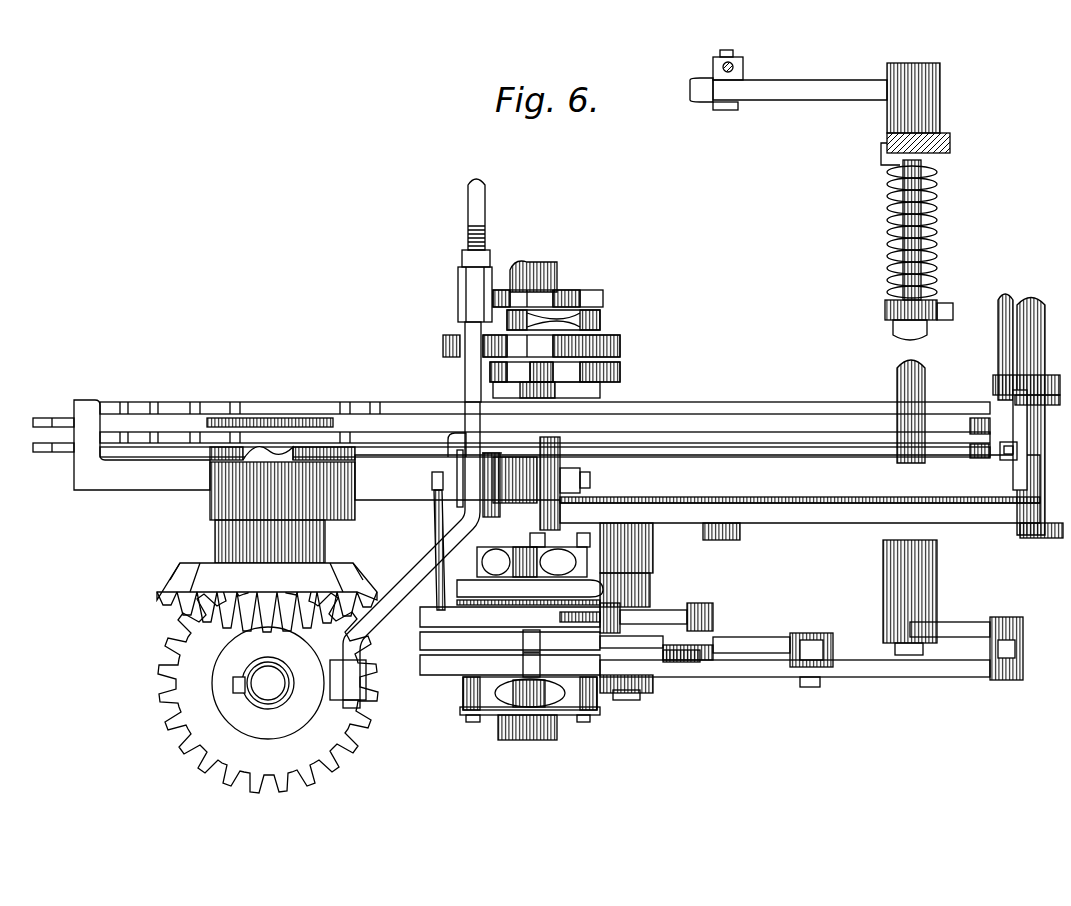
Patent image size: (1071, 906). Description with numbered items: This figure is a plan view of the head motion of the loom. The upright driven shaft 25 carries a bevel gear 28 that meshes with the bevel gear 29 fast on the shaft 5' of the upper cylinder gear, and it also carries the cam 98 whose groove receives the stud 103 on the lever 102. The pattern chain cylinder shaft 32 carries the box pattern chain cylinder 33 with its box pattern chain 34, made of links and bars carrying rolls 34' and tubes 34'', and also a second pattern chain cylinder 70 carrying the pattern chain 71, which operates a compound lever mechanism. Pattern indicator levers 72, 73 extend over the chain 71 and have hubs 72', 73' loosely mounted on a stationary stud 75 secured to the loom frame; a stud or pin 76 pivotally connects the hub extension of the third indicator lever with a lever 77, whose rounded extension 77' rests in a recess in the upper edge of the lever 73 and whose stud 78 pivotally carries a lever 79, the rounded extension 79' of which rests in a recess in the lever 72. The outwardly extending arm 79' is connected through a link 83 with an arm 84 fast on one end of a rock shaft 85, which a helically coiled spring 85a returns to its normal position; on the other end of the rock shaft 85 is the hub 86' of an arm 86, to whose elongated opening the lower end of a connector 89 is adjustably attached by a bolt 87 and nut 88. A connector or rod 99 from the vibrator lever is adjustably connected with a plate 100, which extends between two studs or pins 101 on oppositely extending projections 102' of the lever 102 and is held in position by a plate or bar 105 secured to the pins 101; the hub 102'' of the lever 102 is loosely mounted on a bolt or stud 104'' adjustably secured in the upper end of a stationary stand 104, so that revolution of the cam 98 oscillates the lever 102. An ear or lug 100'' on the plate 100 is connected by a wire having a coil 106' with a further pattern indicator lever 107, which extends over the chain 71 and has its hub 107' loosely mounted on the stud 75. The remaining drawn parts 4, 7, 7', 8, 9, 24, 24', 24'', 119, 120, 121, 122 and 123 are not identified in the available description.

The frame beam 4 is at (135, 482).
The shaft of the upper cylinder gear 5' is at (252, 505).
The rod 7 is at (545, 409).
The rod 7' is at (545, 397).
The rod end 8 is at (36, 421).
The post 9 is at (1002, 298).
The rod 24 is at (493, 625).
The rod block 24' is at (643, 605).
The rod gear 24'' is at (720, 613).
The upright driven shaft 25 is at (258, 678).
The bevel gear 28 is at (215, 770).
The bevel gear 29 is at (190, 590).
The pattern chain cylinder shaft 32 is at (545, 275).
The box pattern chain cylinder 33 is at (585, 318).
The box pattern chain 34 is at (556, 280).
The rolls 34' is at (571, 336).
The tubes 34'' is at (577, 375).
The second pattern chain cylinder 70 is at (530, 700).
The pattern chain 71 is at (580, 722).
The pattern indicator lever 72 is at (493, 675).
The hub 72' is at (646, 708).
The pattern indicator lever 73 is at (524, 650).
The hub 73' is at (688, 624).
The stationary stud 75 is at (625, 695).
The stud or pin 76 is at (690, 665).
The lever 77 is at (773, 638).
The rounded extension 77' is at (479, 670).
The stud 78 is at (808, 690).
The lever 79 is at (795, 687).
The rounded extension 79' is at (674, 697).
The link 83 is at (1015, 640).
The arm 84 is at (950, 628).
The rock shaft 85 is at (900, 336).
The helically coiled spring 85a is at (895, 240).
The arm 86 is at (788, 102).
The hub 86' is at (894, 114).
The bolt 87 is at (730, 52).
The nut 88 is at (722, 108).
The connector 89 is at (740, 63).
The cam 98 is at (240, 715).
The connector or rod 99 is at (475, 202).
The plate 100 is at (450, 326).
The ear or lug 100'' is at (425, 462).
The studs or pins 101 is at (458, 492).
The lever 102 is at (411, 551).
The projections 102' is at (437, 505).
The hub 102'' is at (526, 483).
The stud 103 is at (350, 700).
The stationary stand 104 is at (615, 488).
The bolt or stud 104'' is at (594, 479).
The plate or bar 105 is at (440, 482).
The coil 106' is at (425, 550).
The pattern indicator lever 107 is at (573, 569).
The hub 107' is at (670, 565).
The post 119 is at (1038, 300).
The bracket 120 is at (1030, 380).
The bracket 121 is at (1000, 455).
The rods 122 is at (705, 435).
The block 123 is at (425, 402).